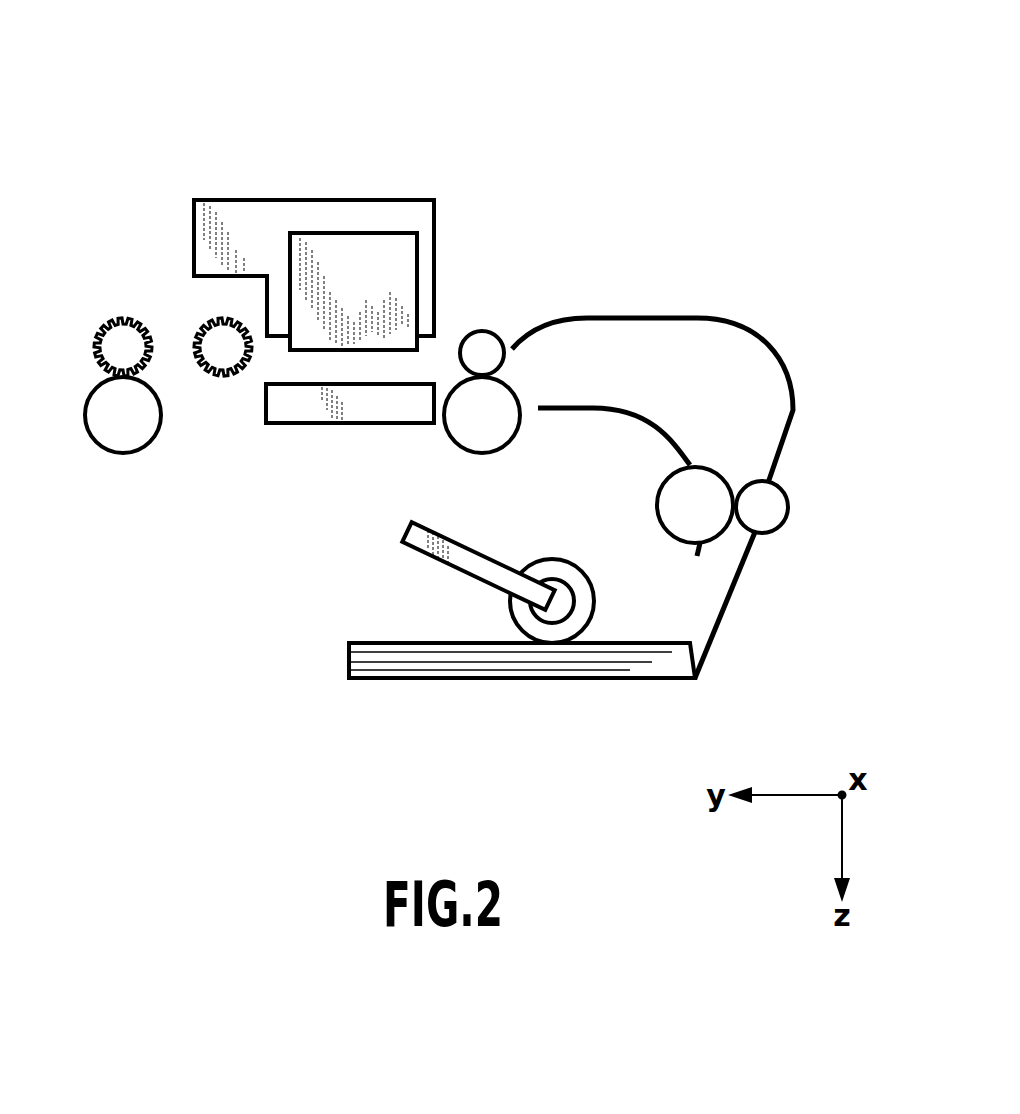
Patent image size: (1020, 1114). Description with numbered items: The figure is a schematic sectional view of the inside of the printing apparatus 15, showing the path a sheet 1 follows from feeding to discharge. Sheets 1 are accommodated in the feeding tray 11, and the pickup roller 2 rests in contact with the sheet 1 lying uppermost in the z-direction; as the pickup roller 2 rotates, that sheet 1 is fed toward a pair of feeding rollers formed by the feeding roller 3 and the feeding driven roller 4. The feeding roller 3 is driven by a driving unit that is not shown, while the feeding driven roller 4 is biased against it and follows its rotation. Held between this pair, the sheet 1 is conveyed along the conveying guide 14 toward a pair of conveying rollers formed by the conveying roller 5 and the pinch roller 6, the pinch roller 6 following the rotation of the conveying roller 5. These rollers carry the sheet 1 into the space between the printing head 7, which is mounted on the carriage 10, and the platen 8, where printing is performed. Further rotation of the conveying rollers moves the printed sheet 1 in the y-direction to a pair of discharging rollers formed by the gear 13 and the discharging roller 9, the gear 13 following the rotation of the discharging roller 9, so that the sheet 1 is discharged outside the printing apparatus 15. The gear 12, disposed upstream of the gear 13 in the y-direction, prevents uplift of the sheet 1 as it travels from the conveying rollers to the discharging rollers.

The sheet 1 is at (368, 643).
The pickup roller 2 is at (552, 572).
The feeding roller 3 is at (672, 505).
The feeding driven roller 4 is at (775, 508).
The conveying roller 5 is at (482, 433).
The pinch roller 6 is at (482, 340).
The printing head 7 is at (352, 250).
The platen 8 is at (295, 410).
The discharging roller 9 is at (127, 433).
The carriage 10 is at (223, 227).
The feeding tray 11 is at (665, 680).
The gear 12 is at (213, 337).
The gear 13 is at (110, 337).
The conveying guide 14 is at (633, 415).
The printing apparatus 15 is at (642, 74).